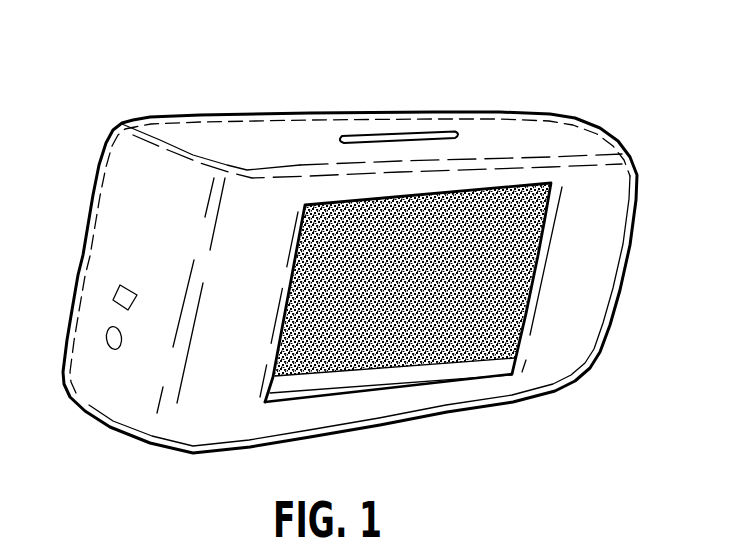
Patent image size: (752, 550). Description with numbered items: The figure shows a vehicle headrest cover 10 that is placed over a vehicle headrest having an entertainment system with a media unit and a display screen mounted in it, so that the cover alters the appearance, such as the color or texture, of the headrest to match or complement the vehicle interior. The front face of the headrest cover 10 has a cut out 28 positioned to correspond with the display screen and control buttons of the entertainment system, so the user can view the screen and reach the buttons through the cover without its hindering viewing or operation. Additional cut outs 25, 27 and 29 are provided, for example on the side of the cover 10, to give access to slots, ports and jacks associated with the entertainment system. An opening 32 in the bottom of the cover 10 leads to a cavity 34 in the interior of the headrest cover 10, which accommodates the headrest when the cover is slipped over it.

The headrest cover 10 is at (456, 94).
The cut out 25 is at (383, 134).
The cut out 27 is at (104, 333).
The cut out 28 is at (515, 187).
The cut out 29 is at (117, 292).
The opening 32 is at (467, 364).
The cavity 34 is at (513, 258).